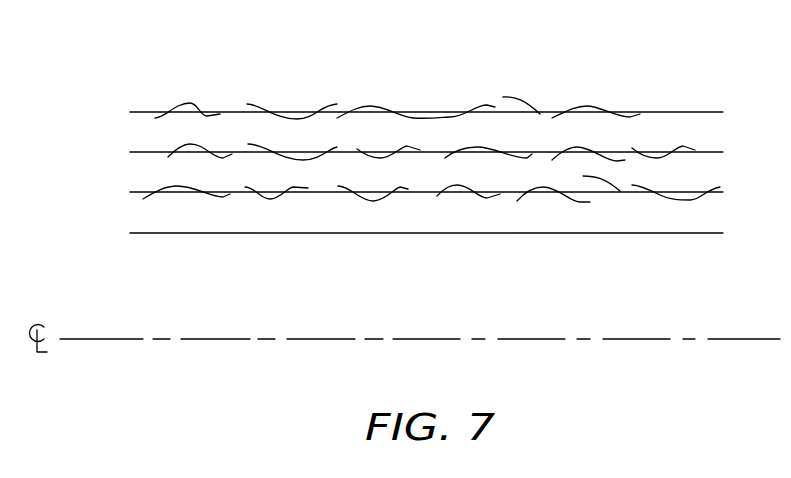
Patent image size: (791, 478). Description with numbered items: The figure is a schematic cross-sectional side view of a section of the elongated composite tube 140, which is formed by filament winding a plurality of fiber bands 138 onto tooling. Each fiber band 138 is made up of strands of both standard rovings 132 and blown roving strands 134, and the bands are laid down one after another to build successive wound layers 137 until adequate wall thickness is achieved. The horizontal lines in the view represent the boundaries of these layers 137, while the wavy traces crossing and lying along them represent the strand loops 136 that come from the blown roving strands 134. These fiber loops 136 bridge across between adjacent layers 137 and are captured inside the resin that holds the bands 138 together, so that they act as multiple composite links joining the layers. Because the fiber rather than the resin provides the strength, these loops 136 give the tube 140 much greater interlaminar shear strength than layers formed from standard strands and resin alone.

The elongated composite tube 140 is at (88, 147).
The standard roving strands 132 is at (605, 196).
The blown roving strands 134 is at (311, 112).
The strand loops 136 is at (190, 103).
The wound layers 137 is at (233, 233).
The fiber bands 138 is at (458, 116).